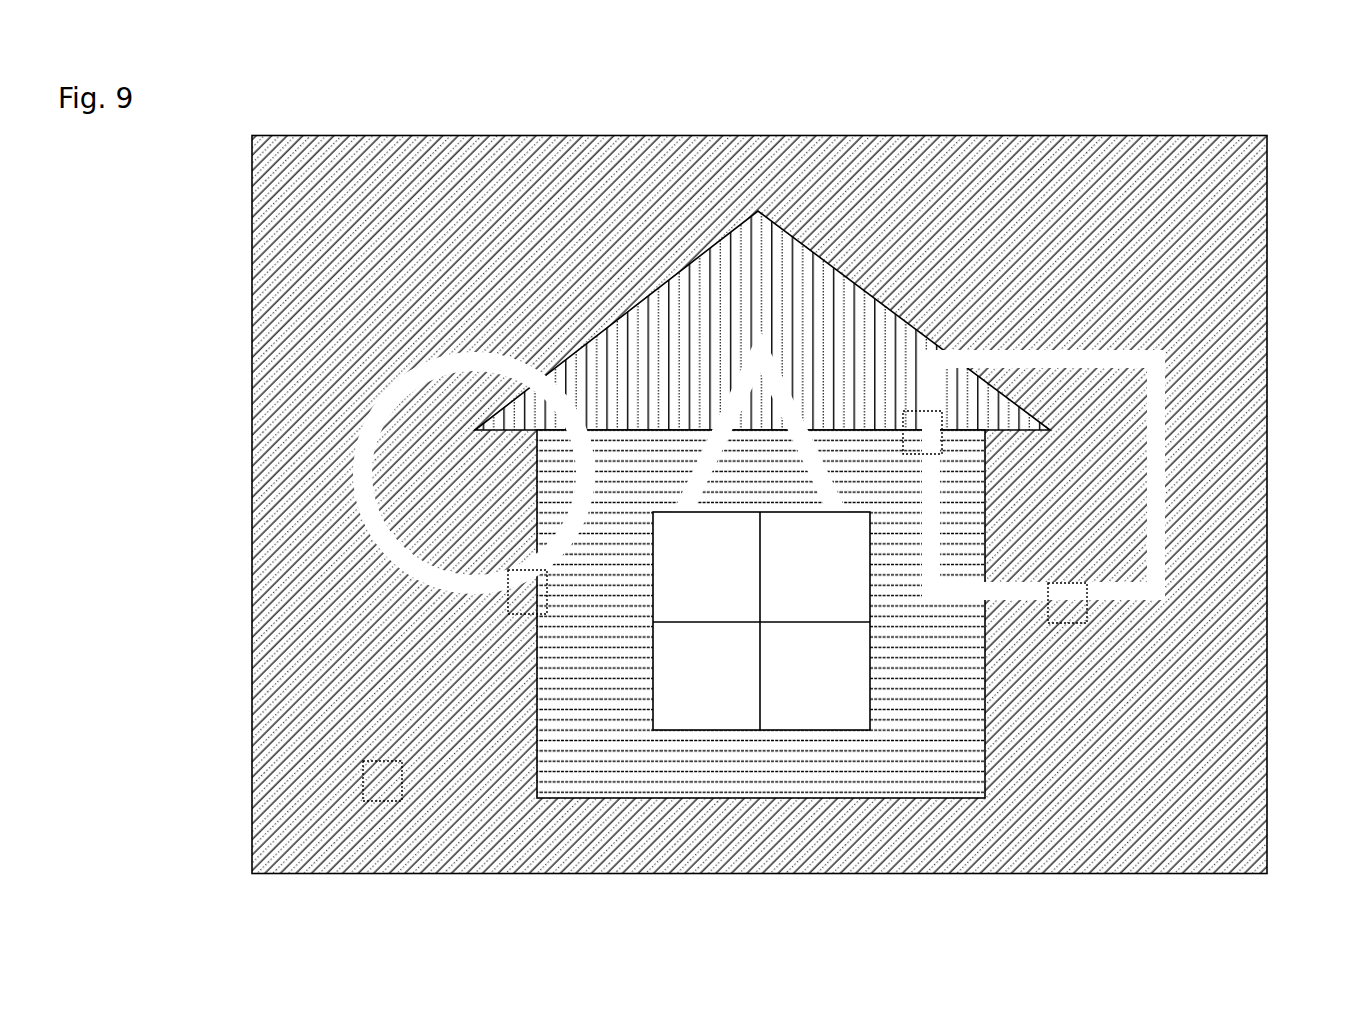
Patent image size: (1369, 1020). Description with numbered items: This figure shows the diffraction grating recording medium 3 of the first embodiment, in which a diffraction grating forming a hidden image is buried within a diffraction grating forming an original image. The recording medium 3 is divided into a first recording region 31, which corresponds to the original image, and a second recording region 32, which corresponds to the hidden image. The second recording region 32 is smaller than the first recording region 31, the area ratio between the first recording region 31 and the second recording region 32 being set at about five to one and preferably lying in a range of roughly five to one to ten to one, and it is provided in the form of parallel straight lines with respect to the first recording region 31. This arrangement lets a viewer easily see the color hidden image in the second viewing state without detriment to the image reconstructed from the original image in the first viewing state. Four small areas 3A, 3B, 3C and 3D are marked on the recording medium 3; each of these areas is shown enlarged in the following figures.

The diffraction grating recording medium 3 is at (801, 505).
The first recording region 31 is at (1272, 534).
The second recording region 32 is at (1068, 347).
The area 3A is at (377, 766).
The area 3B is at (1074, 624).
The area 3C is at (520, 616).
The area 3D is at (907, 419).